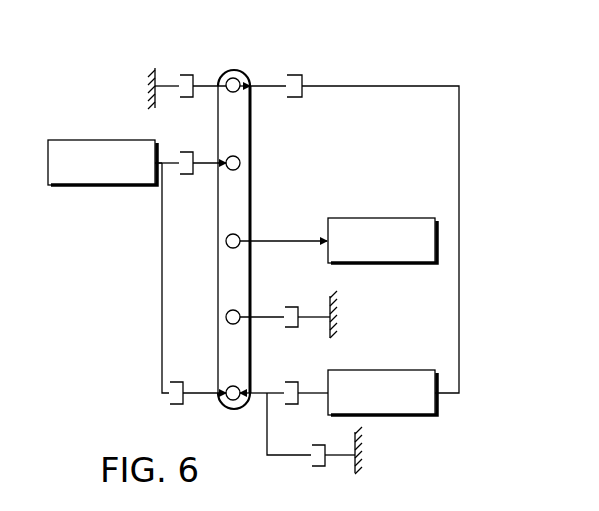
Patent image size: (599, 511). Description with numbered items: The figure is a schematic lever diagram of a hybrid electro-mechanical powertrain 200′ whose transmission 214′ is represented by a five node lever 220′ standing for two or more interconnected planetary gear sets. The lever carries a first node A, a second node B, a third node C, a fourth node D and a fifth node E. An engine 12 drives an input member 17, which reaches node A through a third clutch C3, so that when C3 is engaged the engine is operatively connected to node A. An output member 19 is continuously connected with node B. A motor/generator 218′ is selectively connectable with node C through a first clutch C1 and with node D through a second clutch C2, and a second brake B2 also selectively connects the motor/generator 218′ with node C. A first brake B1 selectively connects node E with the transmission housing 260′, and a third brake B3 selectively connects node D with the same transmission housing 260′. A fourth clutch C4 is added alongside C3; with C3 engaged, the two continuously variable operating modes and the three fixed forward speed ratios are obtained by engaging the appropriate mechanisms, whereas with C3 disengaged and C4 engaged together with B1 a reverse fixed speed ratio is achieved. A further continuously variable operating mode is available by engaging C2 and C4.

The powertrain 200′ is at (128, 27).
The transmission 214′ is at (293, 41).
The five node lever 220′ is at (232, 70).
The transmission housing 260′ is at (150, 69).
The engine 12 is at (100, 139).
The input member 17 is at (164, 160).
The output member 19 is at (383, 217).
The motor/generator 218′ is at (383, 369).
The first brake B1 is at (292, 303).
The second brake B2 is at (318, 440).
The third brake B3 is at (186, 100).
The first clutch C1 is at (284, 370).
The second clutch C2 is at (294, 100).
The third clutch C3 is at (186, 177).
The fourth clutch C4 is at (178, 407).
The first node A is at (237, 171).
The second node B is at (230, 249).
The third node C is at (230, 385).
The fourth node D is at (242, 78).
The fifth node E is at (229, 310).